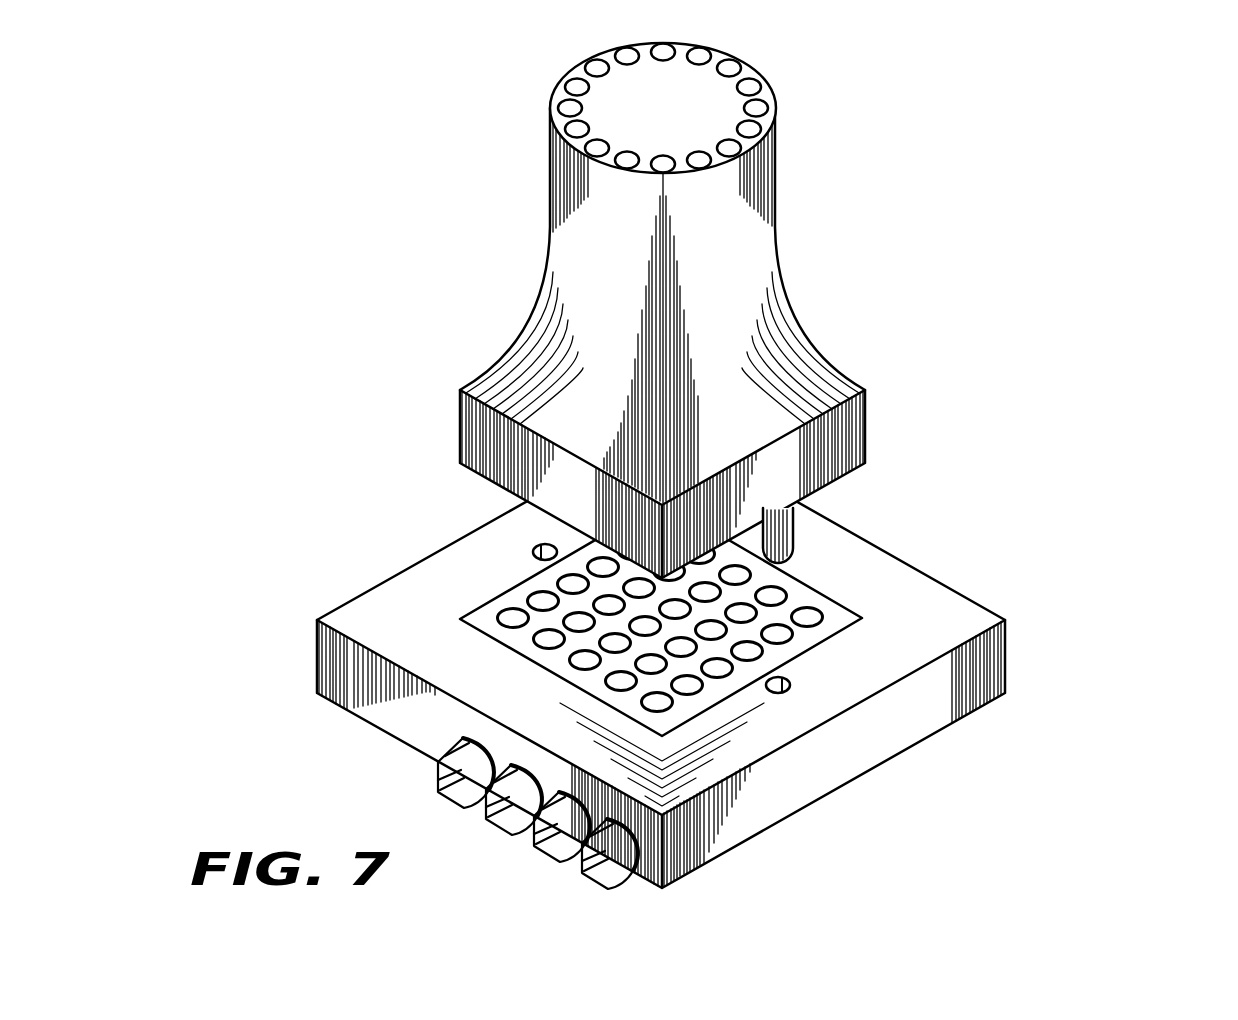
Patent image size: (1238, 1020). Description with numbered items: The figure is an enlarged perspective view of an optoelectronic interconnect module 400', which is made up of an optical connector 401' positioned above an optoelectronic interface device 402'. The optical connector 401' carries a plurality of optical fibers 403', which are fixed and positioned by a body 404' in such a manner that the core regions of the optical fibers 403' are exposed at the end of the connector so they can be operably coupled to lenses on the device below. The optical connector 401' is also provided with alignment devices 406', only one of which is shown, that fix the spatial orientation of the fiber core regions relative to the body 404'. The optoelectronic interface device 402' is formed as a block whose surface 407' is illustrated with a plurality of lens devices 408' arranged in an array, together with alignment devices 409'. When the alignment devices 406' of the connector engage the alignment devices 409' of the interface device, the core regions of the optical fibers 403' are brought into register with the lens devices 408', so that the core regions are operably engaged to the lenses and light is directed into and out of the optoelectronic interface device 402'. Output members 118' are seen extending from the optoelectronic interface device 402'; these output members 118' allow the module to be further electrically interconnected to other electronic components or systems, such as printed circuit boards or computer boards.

The optoelectronic interconnect module 400' is at (760, 464).
The optical connector 401' is at (717, 308).
The optoelectronic interface device 402' is at (733, 657).
The optical fibers 403' is at (685, 106).
The body 404' is at (706, 484).
The alignment devices 406' is at (806, 535).
The surface 407' is at (674, 618).
The lens devices 408' is at (660, 621).
The alignment devices 409' is at (666, 618).
The output members 118' is at (538, 813).